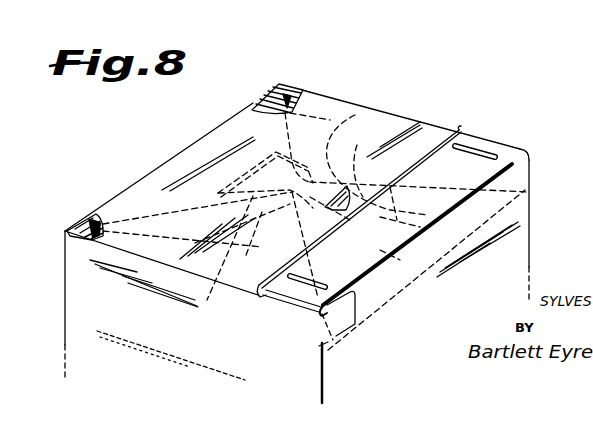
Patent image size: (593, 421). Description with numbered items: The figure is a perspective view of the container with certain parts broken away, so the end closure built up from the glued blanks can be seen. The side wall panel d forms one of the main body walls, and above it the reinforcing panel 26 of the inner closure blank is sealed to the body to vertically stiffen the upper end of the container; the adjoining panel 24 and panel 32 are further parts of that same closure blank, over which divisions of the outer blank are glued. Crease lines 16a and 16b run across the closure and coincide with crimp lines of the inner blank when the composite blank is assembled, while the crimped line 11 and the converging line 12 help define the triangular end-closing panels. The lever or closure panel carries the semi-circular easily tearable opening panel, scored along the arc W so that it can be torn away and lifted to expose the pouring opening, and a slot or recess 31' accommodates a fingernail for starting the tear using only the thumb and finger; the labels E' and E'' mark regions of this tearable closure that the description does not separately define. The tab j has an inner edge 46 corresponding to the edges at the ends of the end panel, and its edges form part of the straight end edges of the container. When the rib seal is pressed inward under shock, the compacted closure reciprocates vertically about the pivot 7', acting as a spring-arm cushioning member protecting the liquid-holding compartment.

The pivot 7' is at (159, 167).
The rear edge E' is at (411, 106).
The crimped line 11 is at (85, 227).
The panel 24 is at (100, 233).
The inner edge 46 is at (512, 164).
The panel d is at (512, 233).
The crease line 16b is at (423, 160).
The crease line 16a is at (396, 250).
The tab j is at (342, 333).
The converging crease line 12 is at (262, 95).
The panel 32 is at (287, 96).
The panel 26 is at (96, 231).
The slot 31' is at (342, 220).
The arc W is at (330, 118).
The left face E'' is at (171, 288).